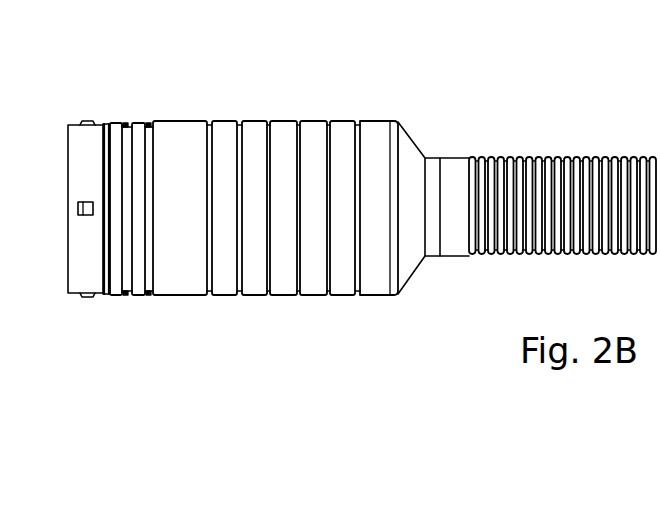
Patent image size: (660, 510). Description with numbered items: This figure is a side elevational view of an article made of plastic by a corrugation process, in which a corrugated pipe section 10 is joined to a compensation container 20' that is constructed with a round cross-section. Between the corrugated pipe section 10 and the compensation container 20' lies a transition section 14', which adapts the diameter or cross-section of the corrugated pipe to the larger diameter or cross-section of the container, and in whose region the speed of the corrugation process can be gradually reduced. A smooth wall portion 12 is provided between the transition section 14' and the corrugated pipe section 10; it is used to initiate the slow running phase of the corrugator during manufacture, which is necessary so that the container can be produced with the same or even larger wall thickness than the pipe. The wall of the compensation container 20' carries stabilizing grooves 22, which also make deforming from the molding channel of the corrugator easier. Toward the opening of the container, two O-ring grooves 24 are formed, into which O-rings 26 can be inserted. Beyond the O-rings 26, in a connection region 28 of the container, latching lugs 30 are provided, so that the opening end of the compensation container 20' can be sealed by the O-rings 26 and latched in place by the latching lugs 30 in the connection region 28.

The corrugated pipe section 10 is at (597, 141).
The smooth wall portion 12 is at (457, 158).
The transition section 14' is at (432, 187).
The compensation container 20' is at (305, 156).
The stabilizing grooves 22 is at (203, 128).
The O-ring grooves 24 is at (150, 160).
The O-rings 26 is at (152, 127).
The connection region 28 is at (89, 277).
The latching lugs 30 is at (87, 121).